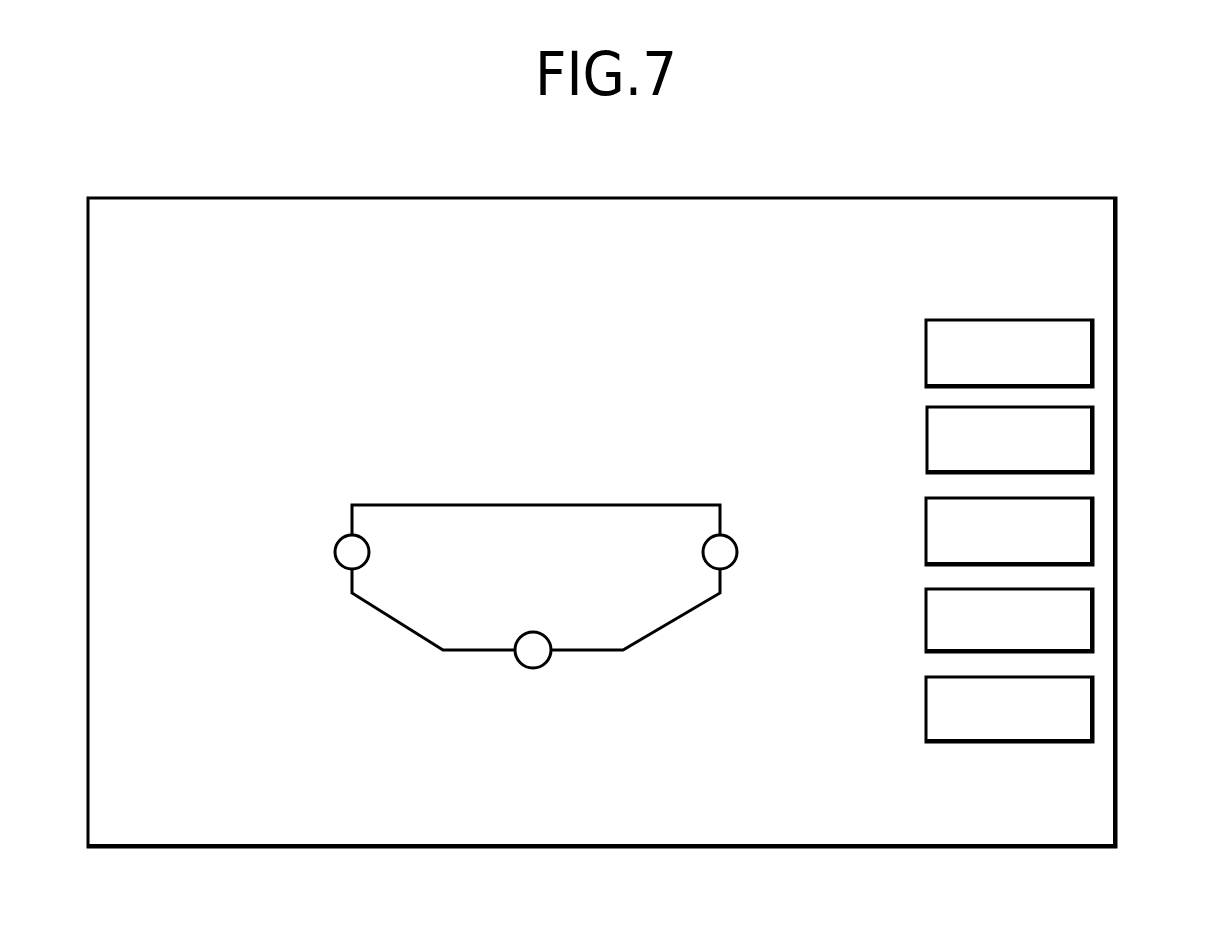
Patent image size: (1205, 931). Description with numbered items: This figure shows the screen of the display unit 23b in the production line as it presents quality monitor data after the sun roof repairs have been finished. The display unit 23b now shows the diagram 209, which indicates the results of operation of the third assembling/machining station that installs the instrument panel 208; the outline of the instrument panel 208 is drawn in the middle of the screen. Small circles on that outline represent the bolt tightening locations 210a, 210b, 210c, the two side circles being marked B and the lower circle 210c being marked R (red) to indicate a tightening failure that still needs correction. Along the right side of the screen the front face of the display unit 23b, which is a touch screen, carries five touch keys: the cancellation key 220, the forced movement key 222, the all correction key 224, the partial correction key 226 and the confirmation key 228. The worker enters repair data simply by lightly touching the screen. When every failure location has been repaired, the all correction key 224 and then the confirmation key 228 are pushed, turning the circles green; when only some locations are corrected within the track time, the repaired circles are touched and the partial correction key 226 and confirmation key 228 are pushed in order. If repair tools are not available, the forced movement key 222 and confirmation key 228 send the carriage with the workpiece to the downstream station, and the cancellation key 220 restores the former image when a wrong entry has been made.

The display unit 23b is at (873, 198).
The instrument panel 208 is at (543, 505).
The diagram 209 is at (548, 546).
The bolt tightening location 210a is at (335, 549).
The bolt tightening location 210b is at (737, 552).
The bolt tightening location 210c is at (525, 668).
The cancellation key 220 is at (1023, 320).
The forced movement key 222 is at (1093, 432).
The all correction key 224 is at (1093, 507).
The partial correction key 226 is at (1093, 613).
The confirmation key 228 is at (1093, 697).